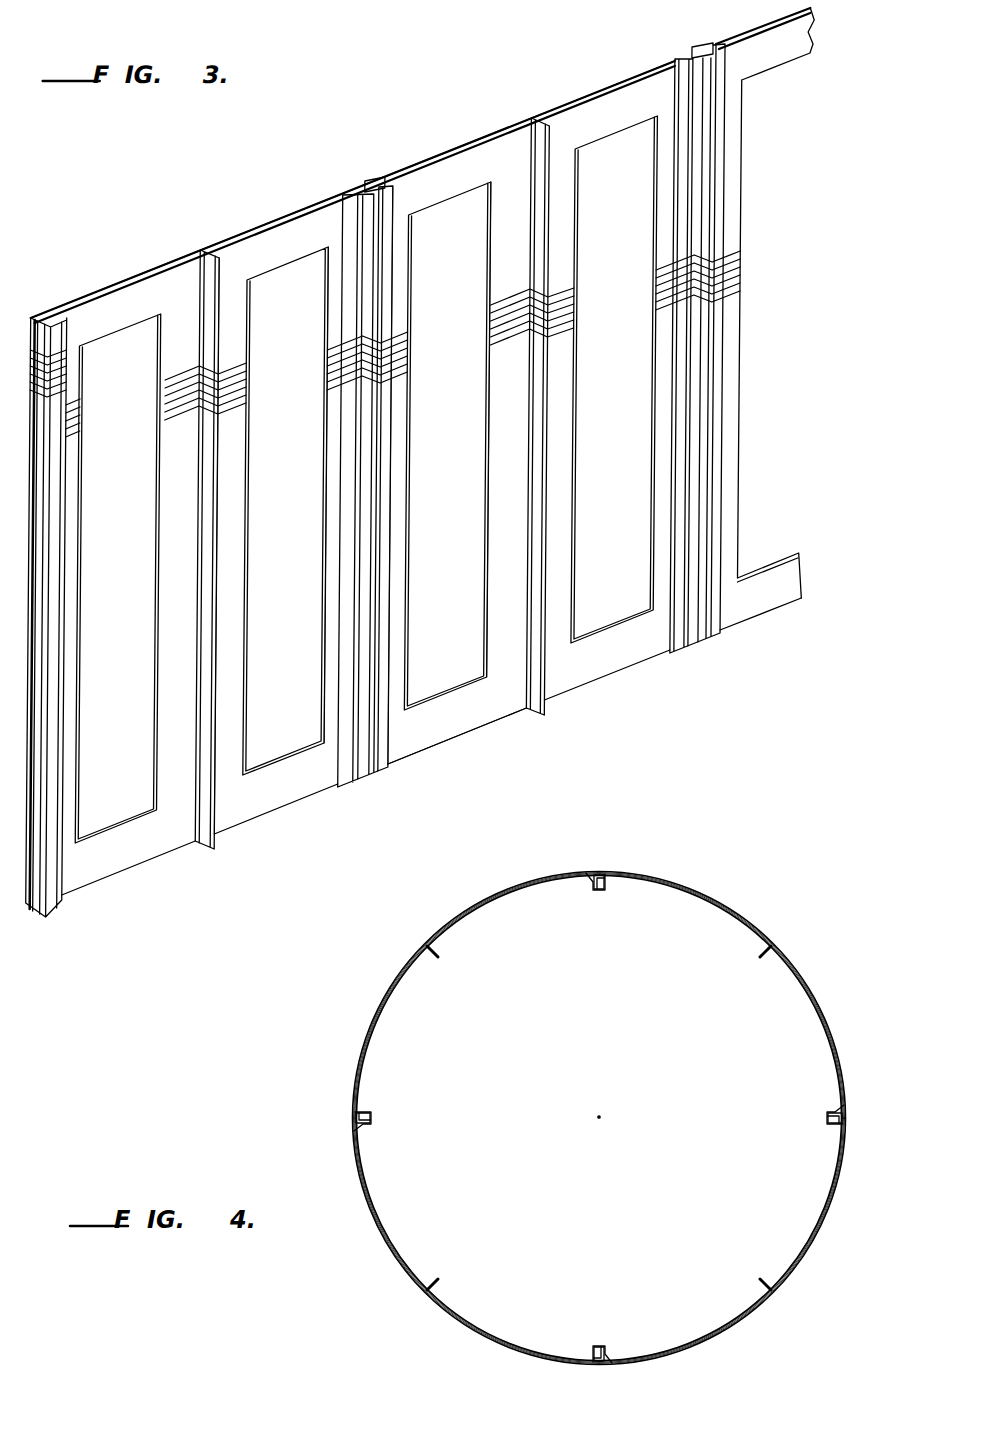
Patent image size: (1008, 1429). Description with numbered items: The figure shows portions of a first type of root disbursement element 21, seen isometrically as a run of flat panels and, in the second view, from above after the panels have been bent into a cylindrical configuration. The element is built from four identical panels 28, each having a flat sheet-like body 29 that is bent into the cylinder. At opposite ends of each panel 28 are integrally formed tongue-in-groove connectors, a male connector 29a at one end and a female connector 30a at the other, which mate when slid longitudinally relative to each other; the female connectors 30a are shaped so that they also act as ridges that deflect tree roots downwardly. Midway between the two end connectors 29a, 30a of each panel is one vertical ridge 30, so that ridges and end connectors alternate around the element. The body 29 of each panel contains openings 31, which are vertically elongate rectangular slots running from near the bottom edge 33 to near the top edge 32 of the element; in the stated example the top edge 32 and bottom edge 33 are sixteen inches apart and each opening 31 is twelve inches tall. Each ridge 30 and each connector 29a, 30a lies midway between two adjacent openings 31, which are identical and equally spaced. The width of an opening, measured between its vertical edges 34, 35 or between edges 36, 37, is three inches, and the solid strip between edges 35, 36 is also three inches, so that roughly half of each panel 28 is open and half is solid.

In FIG. 3, the root disbursement element 21 is at (560, 70).
In FIG. 4, the root disbursement element 21 is at (738, 885).
In FIG. 3, the panel 28 is at (222, 245).
In FIG. 4, the panel 28 is at (508, 890).
In FIG. 3, the sheet-like body 29 is at (165, 283).
In FIG. 4, the sheet-like body 29 is at (402, 966).
In FIG. 3, the male connector 29a is at (368, 186).
In FIG. 4, the male connector 29a is at (604, 877).
In FIG. 3, the ridge 30 is at (218, 822).
In FIG. 4, the ridge 30 is at (440, 952).
In FIG. 3, the female connector 30a is at (63, 905).
In FIG. 4, the female connector 30a is at (599, 893).
In FIG. 3, the opening 31 is at (126, 620).
In FIG. 3, the top edge 32 is at (470, 143).
In FIG. 4, the top edge 32 is at (364, 1026).
In FIG. 3, the bottom edge 33 is at (400, 765).
In FIG. 3, the vertical edge 34 is at (242, 440).
In FIG. 3, the vertical edge 35 is at (323, 620).
In FIG. 3, the vertical edge 36 is at (410, 310).
In FIG. 3, the vertical edge 37 is at (487, 362).